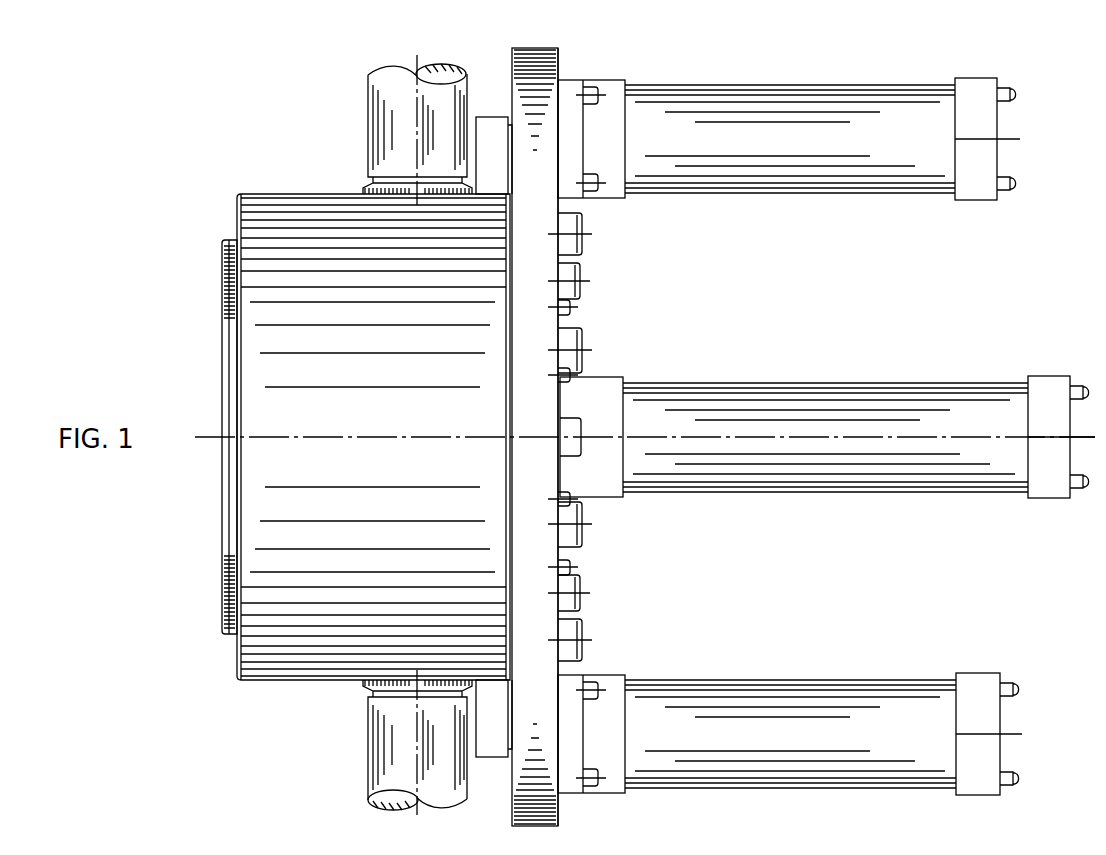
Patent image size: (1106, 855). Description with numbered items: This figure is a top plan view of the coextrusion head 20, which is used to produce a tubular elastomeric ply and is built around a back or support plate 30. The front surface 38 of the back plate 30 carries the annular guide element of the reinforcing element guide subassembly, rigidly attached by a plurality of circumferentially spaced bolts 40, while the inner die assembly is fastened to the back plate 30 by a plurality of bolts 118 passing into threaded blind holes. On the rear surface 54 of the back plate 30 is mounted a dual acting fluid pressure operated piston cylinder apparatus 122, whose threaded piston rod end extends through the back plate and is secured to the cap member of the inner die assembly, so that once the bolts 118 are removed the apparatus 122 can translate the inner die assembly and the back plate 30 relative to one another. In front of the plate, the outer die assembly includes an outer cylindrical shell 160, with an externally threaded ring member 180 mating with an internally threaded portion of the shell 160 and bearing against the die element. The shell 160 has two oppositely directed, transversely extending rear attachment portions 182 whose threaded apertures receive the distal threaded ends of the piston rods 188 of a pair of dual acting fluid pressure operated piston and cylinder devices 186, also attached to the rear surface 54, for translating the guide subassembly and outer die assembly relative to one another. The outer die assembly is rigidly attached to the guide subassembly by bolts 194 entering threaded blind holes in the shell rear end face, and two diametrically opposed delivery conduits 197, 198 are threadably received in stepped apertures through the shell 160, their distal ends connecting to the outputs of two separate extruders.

The coextrusion head 20 is at (280, 160).
The back or support plate 30 is at (541, 44).
The back plate front surface 38 is at (512, 80).
The rear surface of back plate 54 is at (561, 72).
The bolts 40 is at (572, 305).
The bolts 118 is at (582, 340).
The dual acting fluid pressure operated piston cylinder apparatus 122 is at (846, 422).
The outer cylindrical shell 160 is at (330, 215).
The externally threaded ring member 180 is at (222, 245).
The rear attachment portions 182 is at (492, 128).
The dual acting fluid pressure operated piston and cylinder devices 186 is at (840, 140).
The piston rods 188 is at (508, 768).
The bolts 194 is at (580, 235).
The delivery conduit 197 is at (368, 117).
The delivery conduit 198 is at (368, 745).